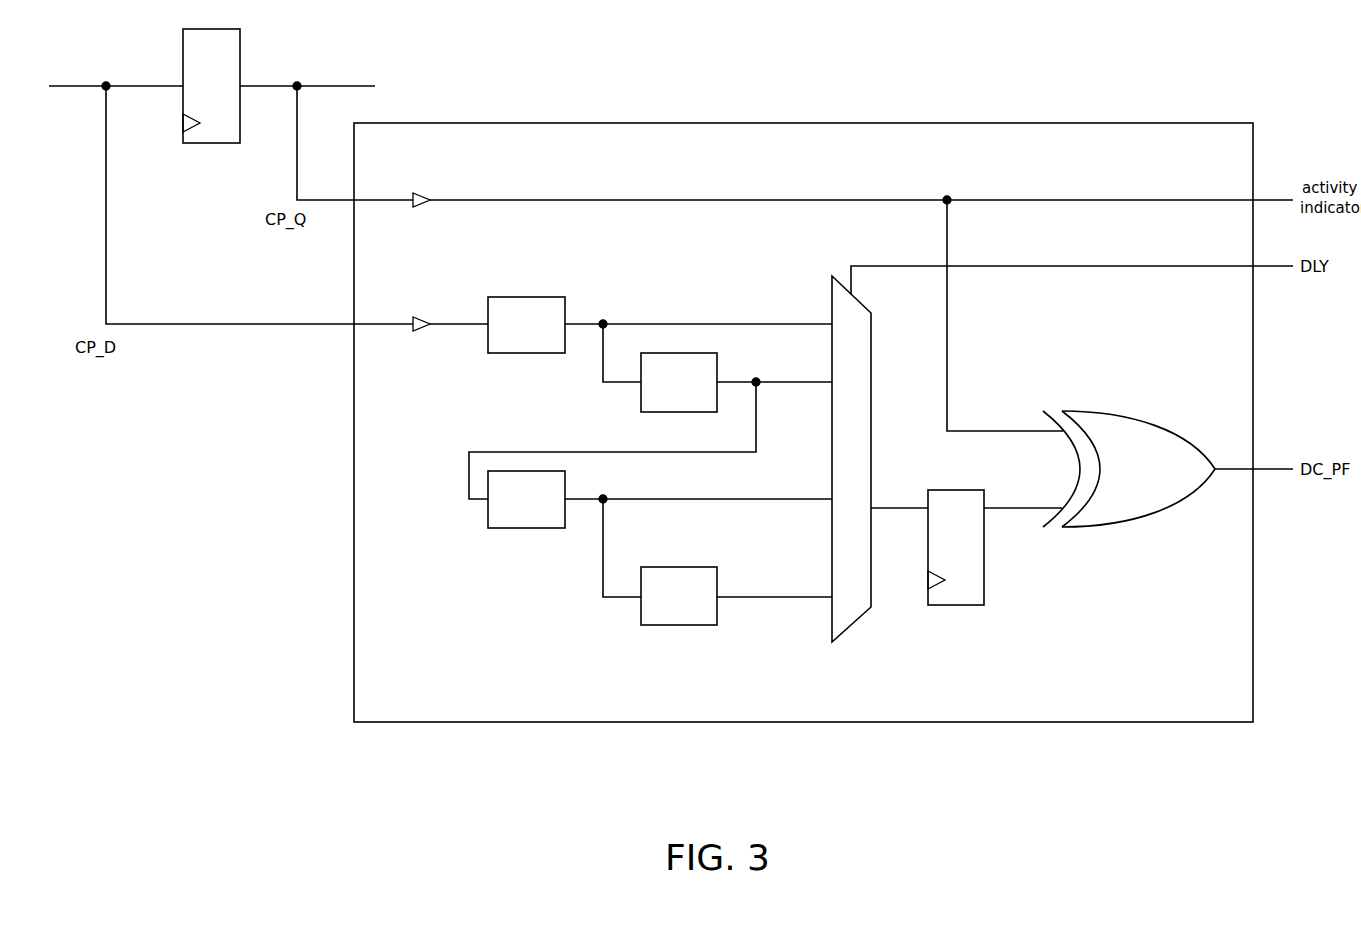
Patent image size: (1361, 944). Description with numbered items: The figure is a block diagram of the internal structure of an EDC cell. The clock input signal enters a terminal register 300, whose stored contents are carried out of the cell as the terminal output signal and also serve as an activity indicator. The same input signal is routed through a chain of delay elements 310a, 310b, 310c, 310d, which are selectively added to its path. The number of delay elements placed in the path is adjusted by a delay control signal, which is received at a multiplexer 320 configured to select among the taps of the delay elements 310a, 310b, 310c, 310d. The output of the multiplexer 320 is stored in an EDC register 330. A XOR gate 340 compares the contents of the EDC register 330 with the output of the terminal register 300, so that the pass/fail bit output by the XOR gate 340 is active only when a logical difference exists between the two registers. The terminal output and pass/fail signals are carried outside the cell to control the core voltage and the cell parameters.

The terminal register 300 is at (211, 86).
The delay element 310a is at (526, 325).
The delay element 310b is at (679, 382).
The delay element 310c is at (526, 499).
The delay element 310d is at (679, 596).
The multiplexer 320 is at (851, 459).
The EDC register 330 is at (956, 547).
The XOR gate 340 is at (1129, 469).